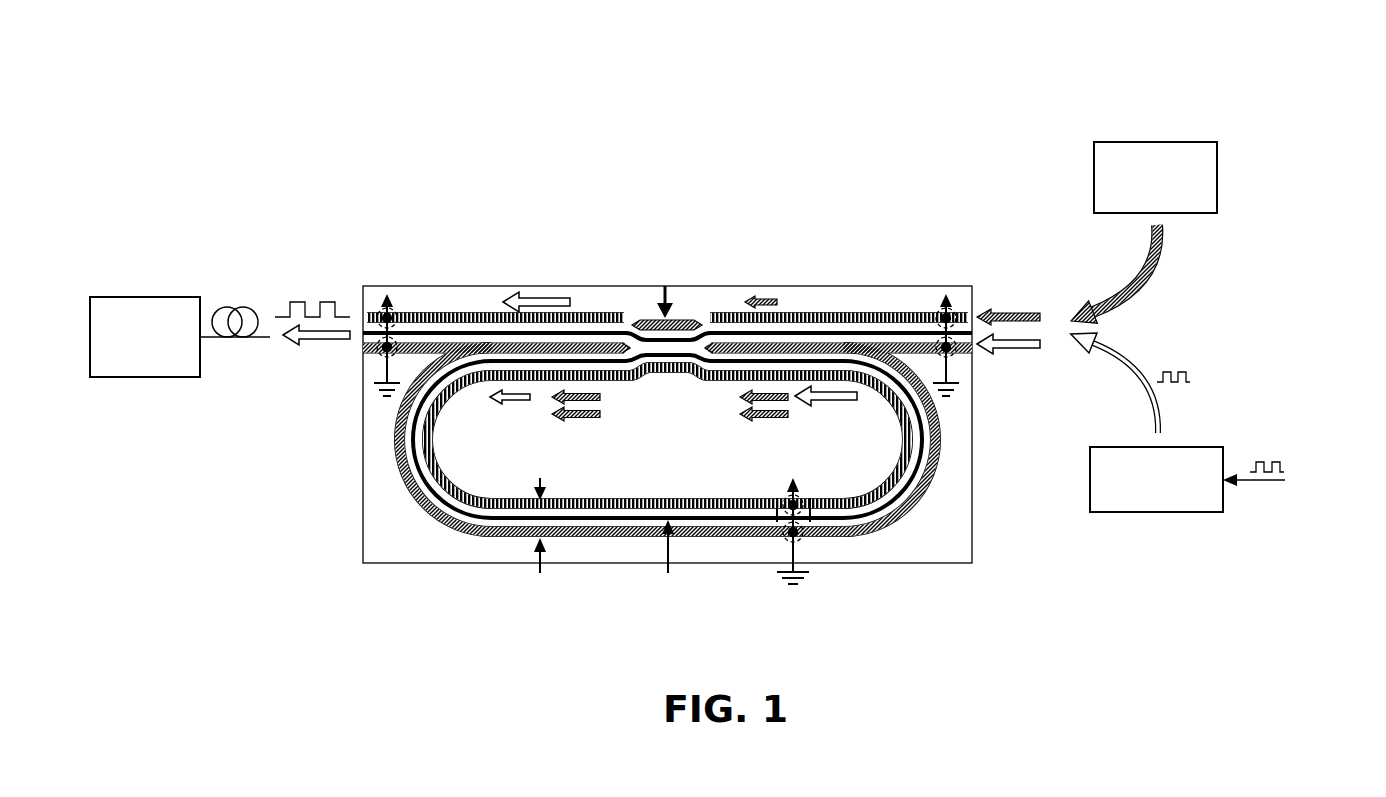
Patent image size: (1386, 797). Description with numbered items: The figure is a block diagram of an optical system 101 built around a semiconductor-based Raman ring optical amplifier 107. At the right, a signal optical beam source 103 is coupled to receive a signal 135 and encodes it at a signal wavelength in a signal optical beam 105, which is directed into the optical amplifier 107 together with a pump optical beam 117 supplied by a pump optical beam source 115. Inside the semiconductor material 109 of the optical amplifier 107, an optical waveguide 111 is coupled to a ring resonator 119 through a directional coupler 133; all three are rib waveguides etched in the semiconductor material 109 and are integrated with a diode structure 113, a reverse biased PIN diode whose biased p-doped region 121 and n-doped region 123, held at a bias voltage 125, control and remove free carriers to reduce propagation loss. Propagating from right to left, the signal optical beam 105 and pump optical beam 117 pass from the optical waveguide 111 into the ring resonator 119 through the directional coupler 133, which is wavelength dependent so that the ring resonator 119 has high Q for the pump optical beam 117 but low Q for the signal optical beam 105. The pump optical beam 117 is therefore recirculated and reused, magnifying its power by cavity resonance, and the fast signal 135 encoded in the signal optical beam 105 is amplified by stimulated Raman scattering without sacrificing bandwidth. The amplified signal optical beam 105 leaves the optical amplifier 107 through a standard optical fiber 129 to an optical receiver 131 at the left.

The system 101 is at (968, 33).
The signal optical beam source 103 is at (1177, 512).
The signal optical beam 105 is at (304, 418).
The optical amplifier 107 is at (530, 153).
The semiconductor material 109 is at (935, 550).
The optical waveguide 111 is at (836, 333).
The diode structure 113 is at (400, 318).
The pump optical beam source 115 is at (1172, 141).
The pump optical beam 117 is at (1118, 292).
The ring resonator 119 is at (720, 600).
The p-doped region 121 is at (498, 598).
The n-doped region 123 is at (482, 318).
The bias voltage 125 is at (375, 258).
The optical fiber 129 is at (221, 340).
The optical receiver 131 is at (90, 327).
The directional coupler 133 is at (660, 252).
The signal 135 is at (1316, 457).